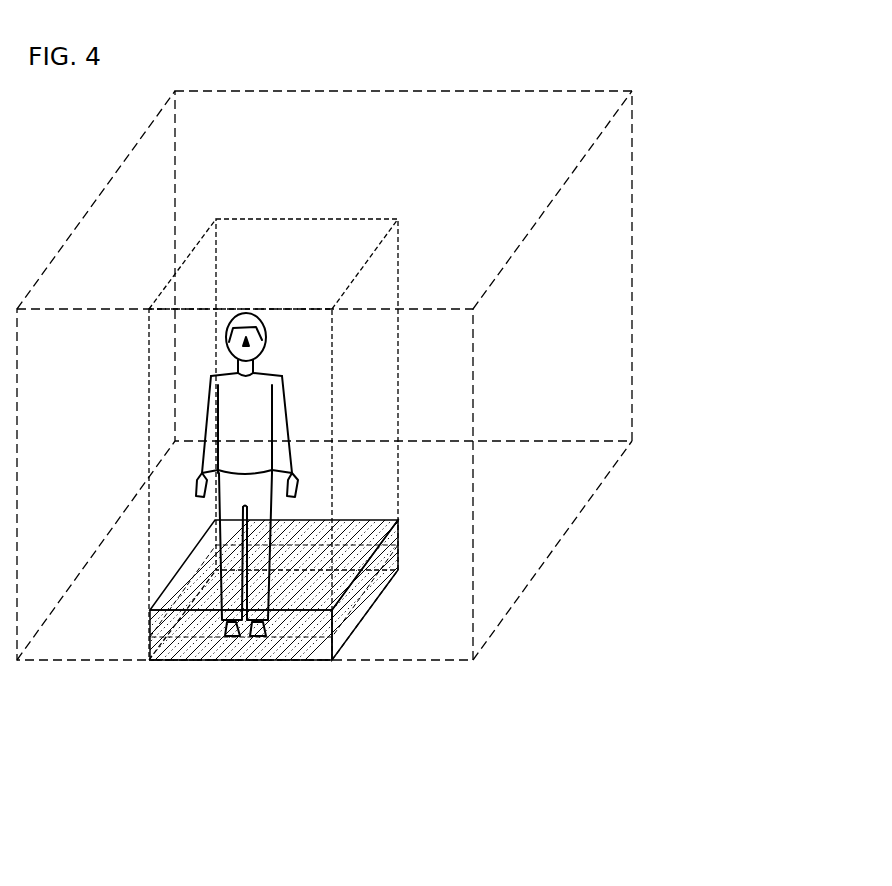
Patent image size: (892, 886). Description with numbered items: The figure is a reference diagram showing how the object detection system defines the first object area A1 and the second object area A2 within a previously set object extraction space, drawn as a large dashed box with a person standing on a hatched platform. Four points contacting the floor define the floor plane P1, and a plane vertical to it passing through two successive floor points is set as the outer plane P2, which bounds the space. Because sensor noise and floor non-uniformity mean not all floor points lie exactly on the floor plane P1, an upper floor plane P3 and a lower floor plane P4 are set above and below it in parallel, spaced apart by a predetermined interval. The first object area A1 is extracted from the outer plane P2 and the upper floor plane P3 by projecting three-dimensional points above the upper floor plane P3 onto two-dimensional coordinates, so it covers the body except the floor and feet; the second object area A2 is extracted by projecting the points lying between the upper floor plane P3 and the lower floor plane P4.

The floor plane P1 is at (203, 642).
The outer plane P2 is at (362, 397).
The upper floor plane P3 is at (172, 585).
The lower floor plane P4 is at (267, 656).
The first object area A1 is at (260, 463).
The second object area A2 is at (270, 597).